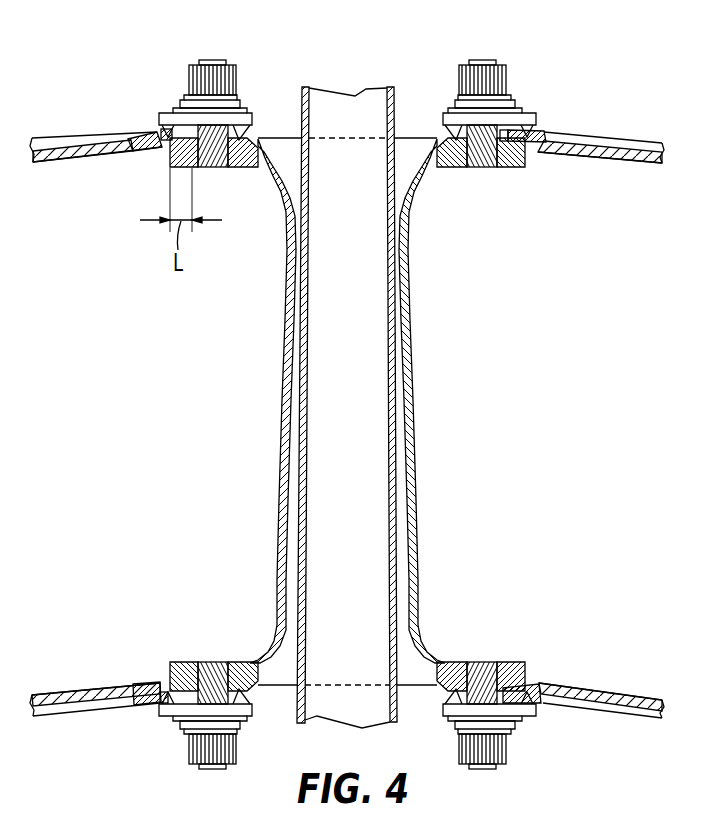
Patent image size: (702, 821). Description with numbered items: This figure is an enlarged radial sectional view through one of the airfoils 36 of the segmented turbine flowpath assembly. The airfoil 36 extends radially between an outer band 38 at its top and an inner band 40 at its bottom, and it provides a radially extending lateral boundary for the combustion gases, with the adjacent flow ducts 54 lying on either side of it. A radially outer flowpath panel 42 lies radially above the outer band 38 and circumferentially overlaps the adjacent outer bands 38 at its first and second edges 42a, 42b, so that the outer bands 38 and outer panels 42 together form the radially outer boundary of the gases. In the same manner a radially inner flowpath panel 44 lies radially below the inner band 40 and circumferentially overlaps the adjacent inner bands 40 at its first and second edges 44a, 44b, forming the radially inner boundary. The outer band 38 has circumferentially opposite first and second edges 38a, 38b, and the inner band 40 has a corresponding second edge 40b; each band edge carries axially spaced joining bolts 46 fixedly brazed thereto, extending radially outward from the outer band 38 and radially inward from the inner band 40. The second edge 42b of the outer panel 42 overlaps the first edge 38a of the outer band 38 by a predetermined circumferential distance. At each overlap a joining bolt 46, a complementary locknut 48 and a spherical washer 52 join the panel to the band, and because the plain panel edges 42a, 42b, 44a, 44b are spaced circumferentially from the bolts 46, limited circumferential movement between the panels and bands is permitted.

The airfoil 36 is at (418, 490).
The outer band 38 is at (266, 170).
The first edge of outer band 38a is at (170, 157).
The second edge of outer band 38b is at (528, 170).
The inner band 40 is at (259, 657).
The second edge of inner band 40b is at (523, 663).
The radially outer flowpath panel 42 is at (82, 152).
The first edge of outer panel 42a is at (544, 130).
The second edge of outer panel 42b is at (160, 128).
The radially inner flowpath panel 44 is at (120, 683).
The first edge of inner panel 44a is at (537, 700).
The second edge of inner panel 44b is at (160, 705).
The joining bolt 46 is at (483, 170).
The locknut 48 is at (510, 82).
The spherical washer 52 is at (180, 107).
The flow duct 54 is at (176, 445).